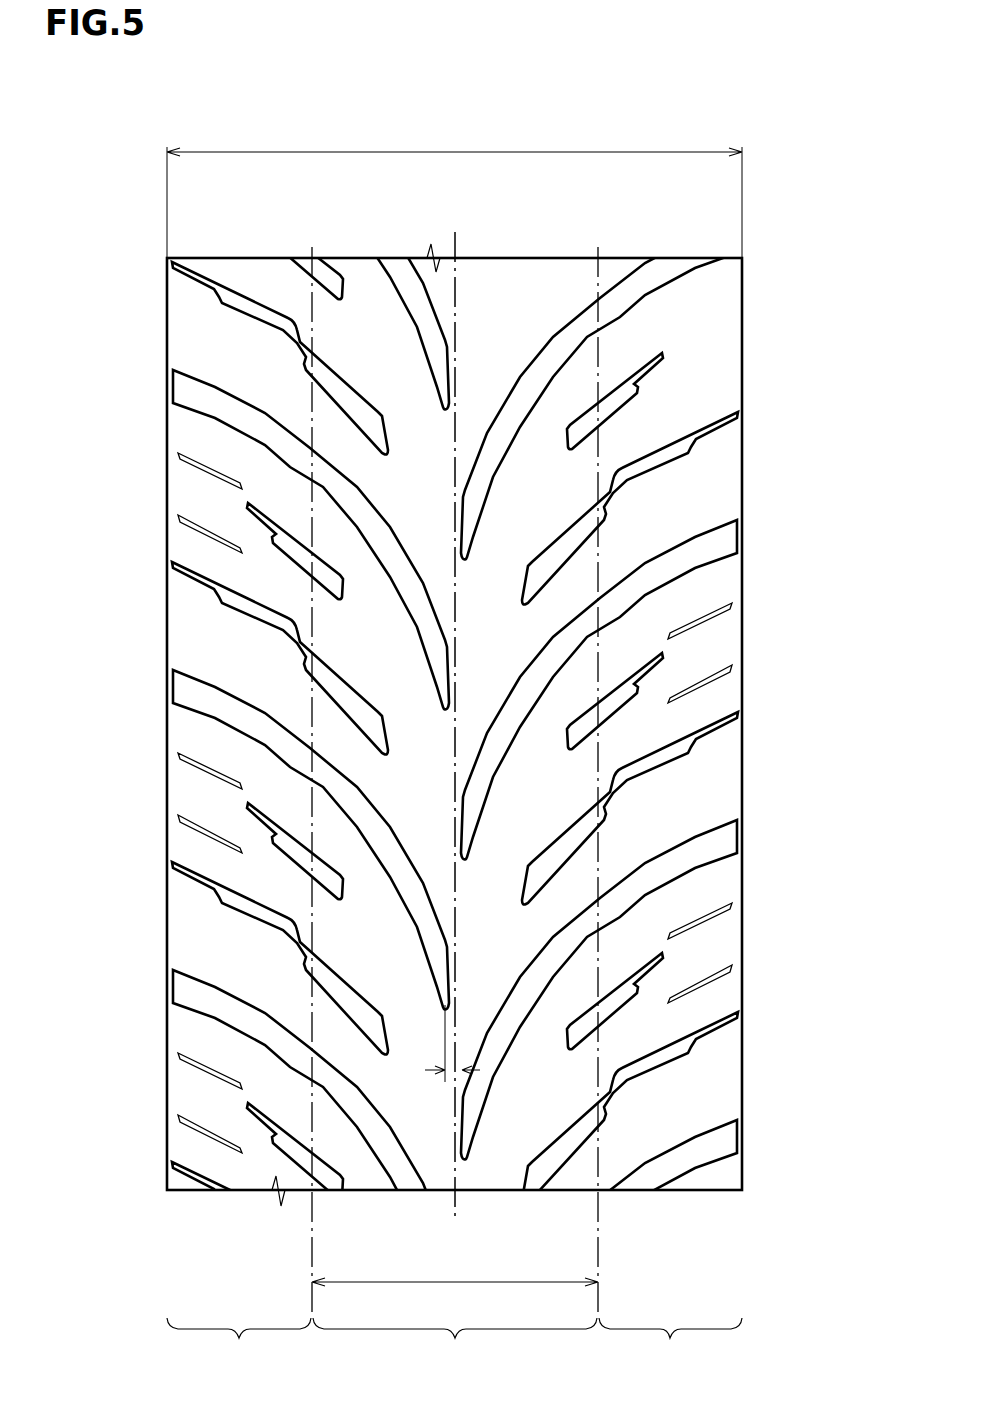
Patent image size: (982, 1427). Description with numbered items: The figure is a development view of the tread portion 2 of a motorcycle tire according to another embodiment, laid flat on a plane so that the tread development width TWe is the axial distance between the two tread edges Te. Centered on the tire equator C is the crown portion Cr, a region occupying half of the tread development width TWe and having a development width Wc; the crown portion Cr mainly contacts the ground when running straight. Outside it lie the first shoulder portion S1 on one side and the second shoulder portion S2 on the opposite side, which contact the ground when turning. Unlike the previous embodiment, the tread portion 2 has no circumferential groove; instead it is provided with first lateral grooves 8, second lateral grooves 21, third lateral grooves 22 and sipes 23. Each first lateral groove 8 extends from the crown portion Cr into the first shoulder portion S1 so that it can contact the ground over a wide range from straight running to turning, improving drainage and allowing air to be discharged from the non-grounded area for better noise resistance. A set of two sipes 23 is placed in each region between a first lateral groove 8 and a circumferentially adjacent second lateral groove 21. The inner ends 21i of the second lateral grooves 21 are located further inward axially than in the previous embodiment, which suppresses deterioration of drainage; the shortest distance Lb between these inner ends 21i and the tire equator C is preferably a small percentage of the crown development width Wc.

The tread portion 2 is at (767, 222).
The first lateral groove 8 is at (186, 594).
The second lateral groove 21 is at (212, 402).
The third lateral groove 22 is at (303, 552).
The sipe 23 is at (205, 765).
The inner end of second lateral groove 21i is at (445, 1012).
The shortest distance Lb is at (458, 1072).
The tire equator C is at (458, 710).
The tread development width TWe is at (454, 188).
The tread edge Te is at (167, 322).
The development width of crown portion Wc is at (455, 784).
The first shoulder portion S1 is at (239, 1348).
The crown portion Cr is at (455, 1348).
The second shoulder portion S2 is at (670, 1348).